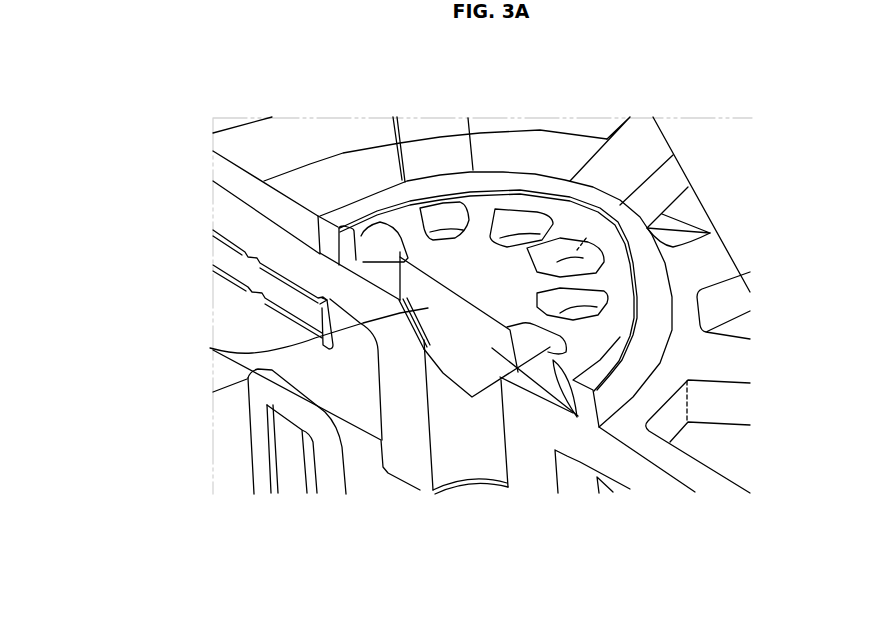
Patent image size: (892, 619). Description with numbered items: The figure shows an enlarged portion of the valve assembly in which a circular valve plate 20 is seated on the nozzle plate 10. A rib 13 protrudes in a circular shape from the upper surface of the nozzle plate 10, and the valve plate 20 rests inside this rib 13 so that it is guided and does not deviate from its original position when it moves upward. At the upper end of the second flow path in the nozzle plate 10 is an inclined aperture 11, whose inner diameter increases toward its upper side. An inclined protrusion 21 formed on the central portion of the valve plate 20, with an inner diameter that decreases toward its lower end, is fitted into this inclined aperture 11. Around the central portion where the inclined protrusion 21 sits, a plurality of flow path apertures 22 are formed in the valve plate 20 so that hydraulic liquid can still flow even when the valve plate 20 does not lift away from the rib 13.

The nozzle plate 10 is at (230, 213).
The inclined aperture 11 is at (240, 353).
The rib 13 is at (372, 200).
The valve plate 20 is at (484, 212).
The inclined protrusion 21 is at (518, 378).
The flow path apertures 22 is at (522, 230).